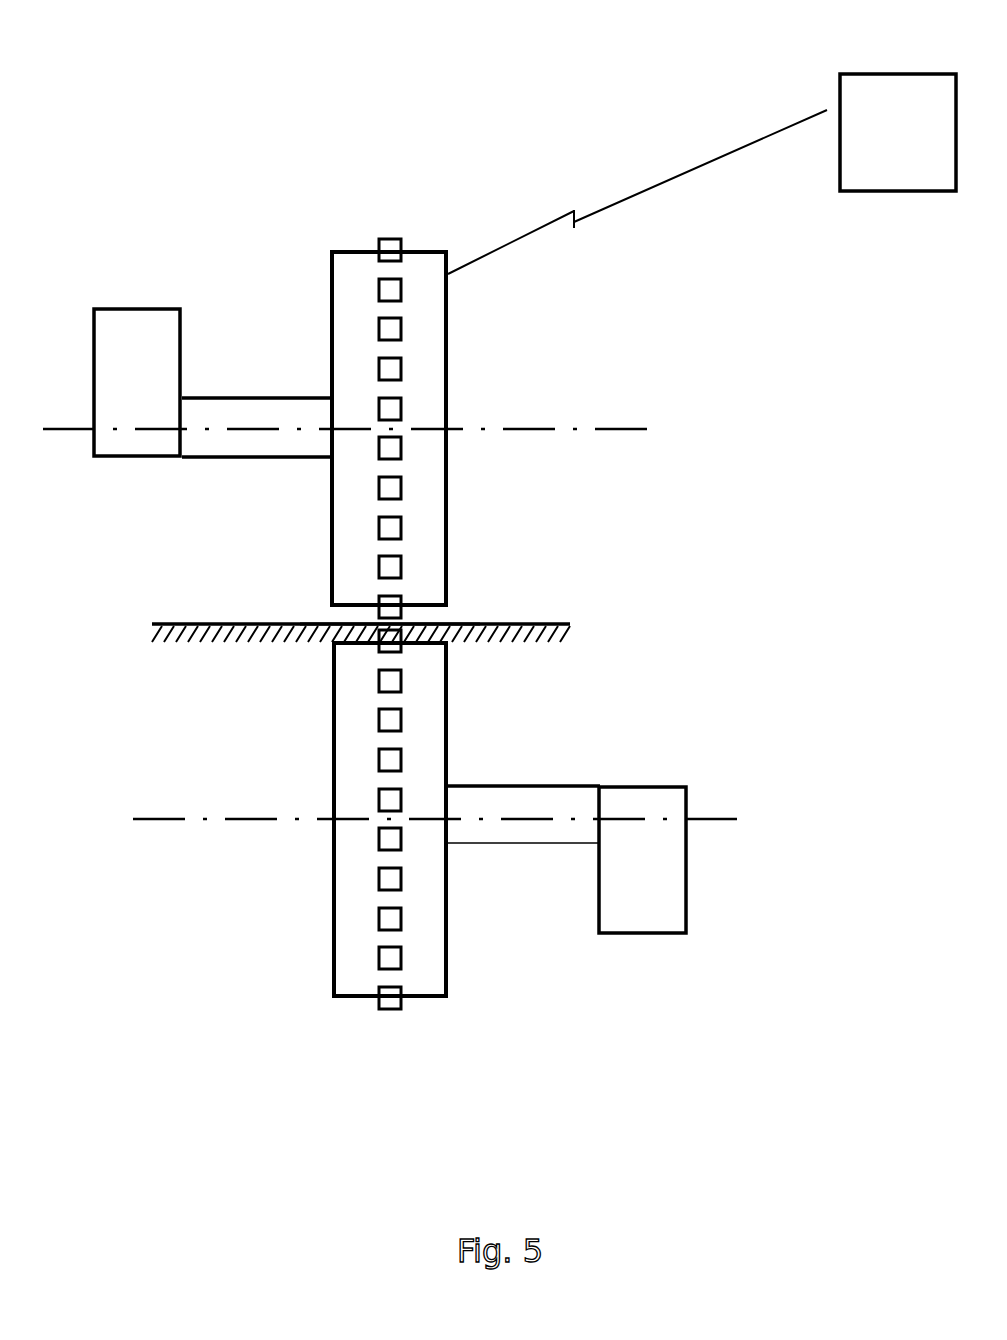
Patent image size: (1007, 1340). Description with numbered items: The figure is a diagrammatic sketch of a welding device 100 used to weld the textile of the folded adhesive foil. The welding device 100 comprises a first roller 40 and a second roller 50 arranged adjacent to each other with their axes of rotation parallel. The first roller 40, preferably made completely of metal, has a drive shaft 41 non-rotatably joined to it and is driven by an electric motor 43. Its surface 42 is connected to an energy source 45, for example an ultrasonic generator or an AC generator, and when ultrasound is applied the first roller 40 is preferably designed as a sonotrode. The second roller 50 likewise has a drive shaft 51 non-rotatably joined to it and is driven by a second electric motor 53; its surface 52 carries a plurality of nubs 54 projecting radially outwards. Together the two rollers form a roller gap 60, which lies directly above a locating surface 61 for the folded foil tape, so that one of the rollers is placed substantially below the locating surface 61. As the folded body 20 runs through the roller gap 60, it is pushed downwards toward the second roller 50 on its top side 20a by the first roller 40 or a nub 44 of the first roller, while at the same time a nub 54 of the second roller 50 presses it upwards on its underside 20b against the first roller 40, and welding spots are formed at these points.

The welding device 100 is at (497, 185).
The energy source 45 is at (887, 80).
The first roller 40 is at (463, 305).
The surface of the first roller 42 is at (362, 267).
The electric motor 43 is at (142, 308).
The drive shaft 41 is at (227, 415).
The nub 44 is at (400, 370).
The folded body 20 is at (449, 557).
The top side 20a is at (463, 608).
The underside 20b is at (545, 615).
The roller gap 60 is at (327, 617).
The locating surface 61 is at (167, 653).
The second roller 50 is at (495, 685).
The surface of the second roller 52 is at (435, 957).
The nubs 54 is at (401, 757).
The drive shaft 51 is at (518, 830).
The second electric motor 53 is at (673, 935).